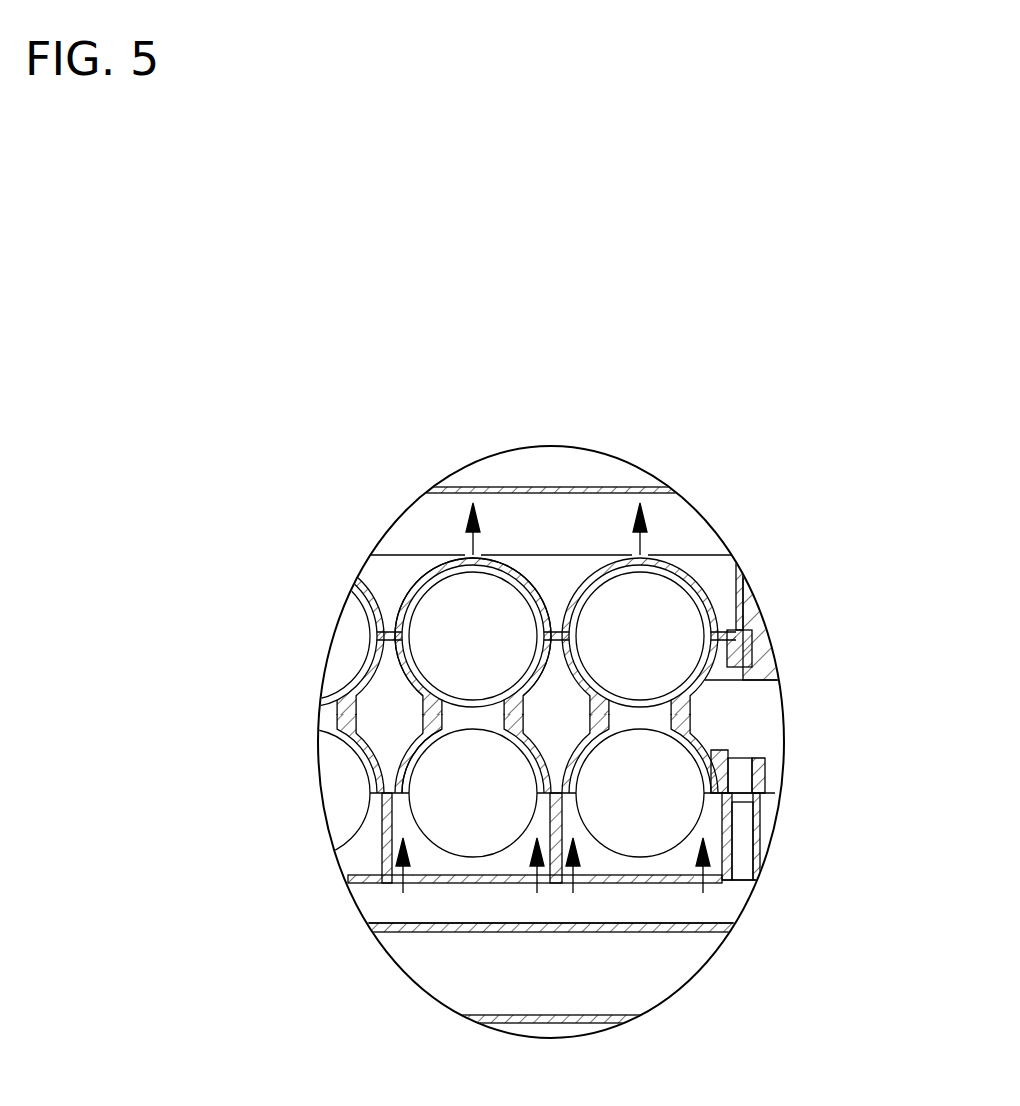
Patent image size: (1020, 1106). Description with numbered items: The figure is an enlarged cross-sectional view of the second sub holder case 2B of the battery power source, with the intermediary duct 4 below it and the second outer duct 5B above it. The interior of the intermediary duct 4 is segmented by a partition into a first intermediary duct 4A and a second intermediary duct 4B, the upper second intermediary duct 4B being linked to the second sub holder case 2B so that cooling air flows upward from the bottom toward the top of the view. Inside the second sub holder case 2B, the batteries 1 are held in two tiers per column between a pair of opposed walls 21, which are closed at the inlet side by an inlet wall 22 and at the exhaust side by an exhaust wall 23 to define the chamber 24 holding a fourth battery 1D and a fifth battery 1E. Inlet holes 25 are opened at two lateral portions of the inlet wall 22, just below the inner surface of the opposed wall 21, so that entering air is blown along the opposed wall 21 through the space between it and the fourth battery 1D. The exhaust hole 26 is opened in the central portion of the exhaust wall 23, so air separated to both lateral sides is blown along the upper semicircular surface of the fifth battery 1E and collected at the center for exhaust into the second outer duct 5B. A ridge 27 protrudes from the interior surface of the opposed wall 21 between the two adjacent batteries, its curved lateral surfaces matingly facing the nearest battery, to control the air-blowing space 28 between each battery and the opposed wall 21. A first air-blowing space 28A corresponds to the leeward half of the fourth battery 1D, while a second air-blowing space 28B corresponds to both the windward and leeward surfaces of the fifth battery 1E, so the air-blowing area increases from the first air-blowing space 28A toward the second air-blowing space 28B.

The battery 1 is at (614, 652).
The fourth battery 1D is at (503, 767).
The fifth battery 1E is at (500, 600).
The second sub holder case 2B is at (833, 548).
The intermediary duct 4 is at (601, 968).
The first intermediary duct 4A is at (672, 981).
The second intermediary duct 4B is at (674, 918).
The second outer duct 5B is at (427, 520).
The opposed wall 21 is at (370, 794).
The inlet wall 22 is at (442, 923).
The exhaust wall 23 is at (420, 563).
The chamber 24 is at (398, 825).
The inlet hole 25 is at (568, 975).
The exhaust hole 26 is at (491, 556).
The ridge 27 is at (550, 793).
The air-blowing space 28 is at (355, 675).
The first air-blowing space 28A is at (398, 758).
The second air-blowing space 28B is at (404, 613).